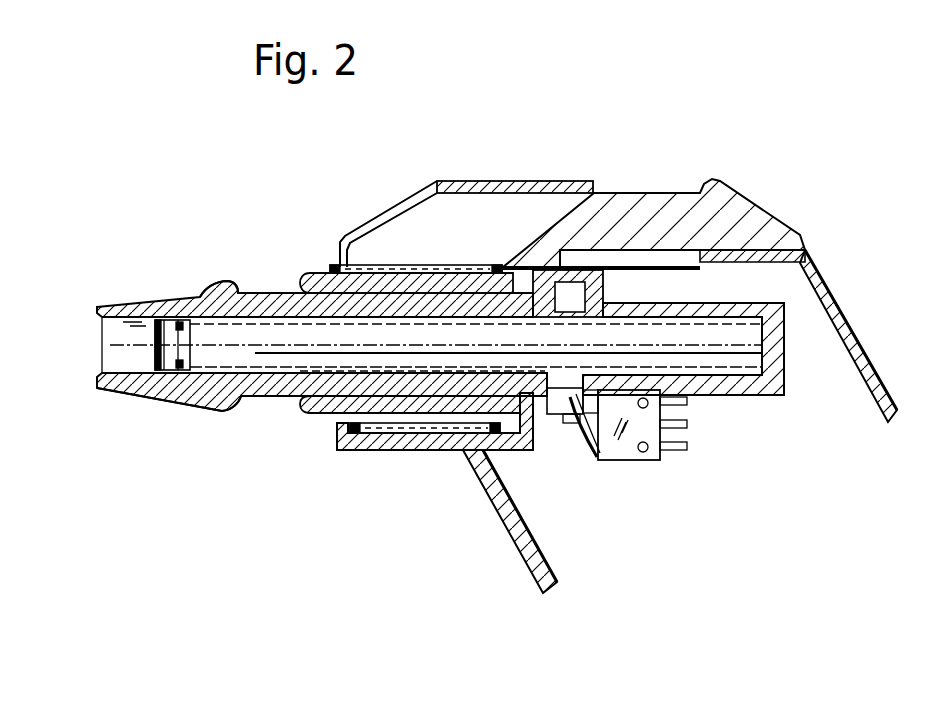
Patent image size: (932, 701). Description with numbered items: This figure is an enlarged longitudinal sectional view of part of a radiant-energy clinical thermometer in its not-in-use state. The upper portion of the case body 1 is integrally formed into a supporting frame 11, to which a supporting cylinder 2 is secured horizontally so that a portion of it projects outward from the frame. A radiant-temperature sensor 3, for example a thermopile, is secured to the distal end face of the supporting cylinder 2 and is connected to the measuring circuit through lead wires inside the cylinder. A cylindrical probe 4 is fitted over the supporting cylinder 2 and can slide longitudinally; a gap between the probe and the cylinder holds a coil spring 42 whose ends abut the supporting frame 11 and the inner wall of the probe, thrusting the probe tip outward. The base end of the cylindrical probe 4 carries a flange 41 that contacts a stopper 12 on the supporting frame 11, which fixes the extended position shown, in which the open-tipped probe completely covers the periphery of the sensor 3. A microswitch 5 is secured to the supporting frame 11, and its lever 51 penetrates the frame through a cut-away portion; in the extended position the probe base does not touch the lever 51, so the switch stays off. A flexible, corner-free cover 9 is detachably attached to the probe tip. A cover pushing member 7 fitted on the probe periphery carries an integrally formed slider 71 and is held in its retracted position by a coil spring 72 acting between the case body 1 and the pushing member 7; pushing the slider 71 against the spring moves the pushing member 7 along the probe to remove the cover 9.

The case body 1 is at (870, 364).
The supporting cylinder 2 is at (240, 352).
The radiant-temperature sensor 3 is at (162, 347).
The cylindrical probe 4 is at (166, 303).
The microswitch 5 is at (632, 455).
The cover pushing member 7 is at (305, 278).
The cover 9 is at (140, 396).
The supporting frame 11 is at (754, 388).
The stopper 12 is at (506, 267).
The flange 41 is at (560, 270).
The coil spring 42 is at (367, 402).
The lever 51 is at (577, 444).
The slider 71 is at (748, 213).
The coil spring 72 is at (352, 265).